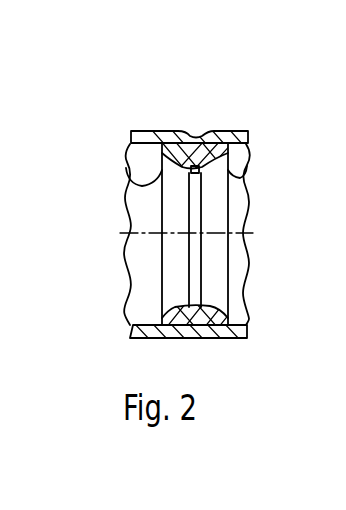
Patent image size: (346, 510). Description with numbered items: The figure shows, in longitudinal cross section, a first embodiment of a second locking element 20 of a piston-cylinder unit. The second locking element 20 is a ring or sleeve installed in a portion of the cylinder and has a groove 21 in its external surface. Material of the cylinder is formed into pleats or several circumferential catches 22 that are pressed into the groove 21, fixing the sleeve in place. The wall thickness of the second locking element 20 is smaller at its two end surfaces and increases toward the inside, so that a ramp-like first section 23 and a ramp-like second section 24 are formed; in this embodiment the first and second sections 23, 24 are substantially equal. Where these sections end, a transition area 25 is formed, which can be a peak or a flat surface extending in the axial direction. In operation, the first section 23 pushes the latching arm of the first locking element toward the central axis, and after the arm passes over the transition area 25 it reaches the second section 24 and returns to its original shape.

The second locking element 20 is at (215, 147).
The groove 21 is at (226, 308).
The circumferential catches 22 is at (196, 333).
The first section 23 is at (254, 157).
The second section 24 is at (126, 172).
The transition area 25 is at (176, 157).